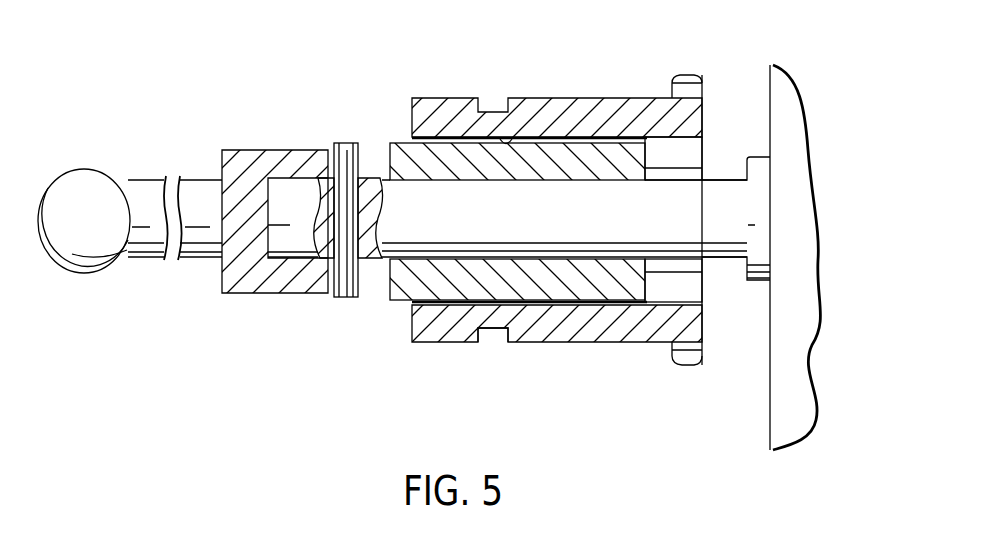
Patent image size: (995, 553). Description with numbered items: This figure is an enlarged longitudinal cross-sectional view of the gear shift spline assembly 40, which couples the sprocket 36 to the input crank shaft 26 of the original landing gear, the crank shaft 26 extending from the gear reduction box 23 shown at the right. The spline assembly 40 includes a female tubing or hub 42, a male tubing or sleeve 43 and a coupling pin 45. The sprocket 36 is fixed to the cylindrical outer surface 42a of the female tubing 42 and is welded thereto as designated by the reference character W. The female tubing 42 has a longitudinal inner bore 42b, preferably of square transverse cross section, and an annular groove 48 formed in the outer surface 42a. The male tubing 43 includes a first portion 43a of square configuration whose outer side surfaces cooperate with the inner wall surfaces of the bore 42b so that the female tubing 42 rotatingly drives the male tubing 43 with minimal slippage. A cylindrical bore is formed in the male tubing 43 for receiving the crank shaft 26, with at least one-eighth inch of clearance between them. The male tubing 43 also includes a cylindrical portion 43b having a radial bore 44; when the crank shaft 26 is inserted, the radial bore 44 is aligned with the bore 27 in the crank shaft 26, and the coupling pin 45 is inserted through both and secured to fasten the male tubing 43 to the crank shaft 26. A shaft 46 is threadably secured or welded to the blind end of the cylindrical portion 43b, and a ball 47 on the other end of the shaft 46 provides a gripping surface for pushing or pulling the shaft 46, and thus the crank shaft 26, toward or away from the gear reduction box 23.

The spline assembly 40 is at (152, 84).
The gear reduction box 23 is at (795, 335).
The input crank shaft 26 is at (713, 224).
The bore 27 is at (383, 212).
The sprocket 36 is at (691, 75).
The female tubing 42 is at (435, 305).
The cylindrical outer surface 42a is at (603, 98).
The longitudinal inner bore 42b is at (500, 138).
The male tubing 43 is at (407, 143).
The first portion 43a is at (585, 168).
The cylindrical portion 43b is at (275, 148).
The radial bore 44 is at (362, 146).
The coupling pin 45 is at (348, 298).
The shaft 46 is at (193, 258).
The ball 47 is at (90, 275).
The annular groove 48 is at (497, 330).
The weld W is at (222, 180).